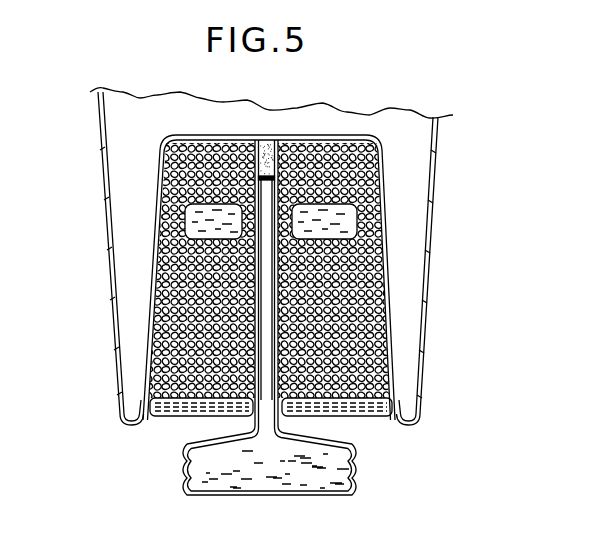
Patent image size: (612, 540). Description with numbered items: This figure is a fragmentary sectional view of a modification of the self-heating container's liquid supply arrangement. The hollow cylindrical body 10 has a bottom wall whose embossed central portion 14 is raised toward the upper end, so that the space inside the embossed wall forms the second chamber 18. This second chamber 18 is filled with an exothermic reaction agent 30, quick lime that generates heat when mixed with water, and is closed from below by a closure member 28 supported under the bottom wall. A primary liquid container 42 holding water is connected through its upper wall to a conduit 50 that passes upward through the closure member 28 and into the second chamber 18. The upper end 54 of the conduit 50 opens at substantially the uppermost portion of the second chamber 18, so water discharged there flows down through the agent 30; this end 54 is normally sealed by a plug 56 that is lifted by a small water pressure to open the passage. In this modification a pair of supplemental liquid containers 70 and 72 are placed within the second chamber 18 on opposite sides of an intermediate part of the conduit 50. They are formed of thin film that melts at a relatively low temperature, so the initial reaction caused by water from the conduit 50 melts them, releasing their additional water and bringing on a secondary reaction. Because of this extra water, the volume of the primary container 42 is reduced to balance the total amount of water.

The body 10 is at (430, 283).
The central portion 14 is at (343, 137).
The second chamber 18 is at (150, 330).
The closure member 28 is at (347, 410).
The exothermic reaction agent 30 is at (380, 160).
The container 42 is at (360, 480).
The conduit 50 is at (222, 382).
The upper end 54 is at (258, 141).
The plug 56 is at (275, 142).
The supplemental liquid container 70 is at (163, 220).
The supplemental liquid container 72 is at (382, 214).